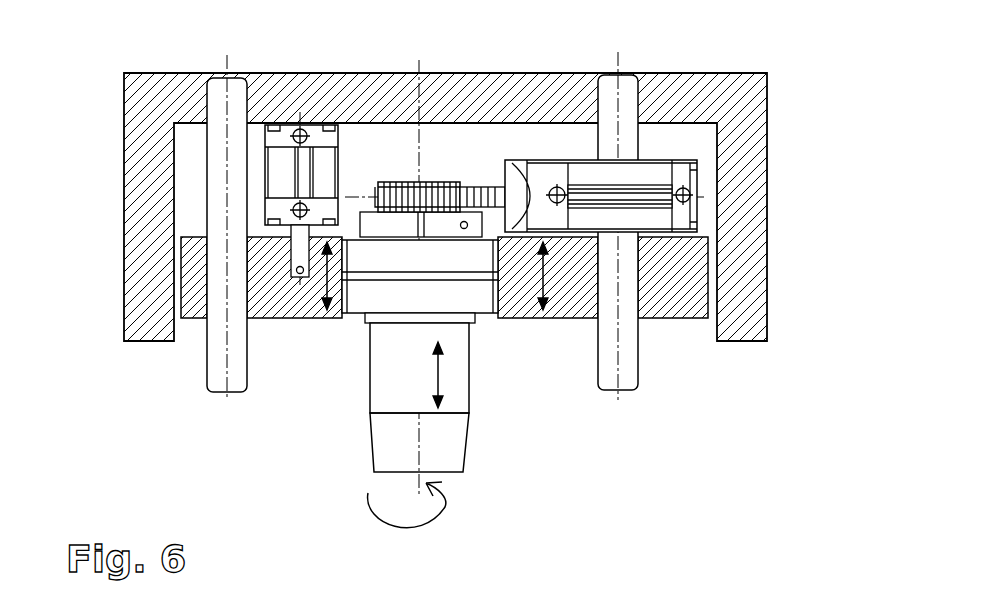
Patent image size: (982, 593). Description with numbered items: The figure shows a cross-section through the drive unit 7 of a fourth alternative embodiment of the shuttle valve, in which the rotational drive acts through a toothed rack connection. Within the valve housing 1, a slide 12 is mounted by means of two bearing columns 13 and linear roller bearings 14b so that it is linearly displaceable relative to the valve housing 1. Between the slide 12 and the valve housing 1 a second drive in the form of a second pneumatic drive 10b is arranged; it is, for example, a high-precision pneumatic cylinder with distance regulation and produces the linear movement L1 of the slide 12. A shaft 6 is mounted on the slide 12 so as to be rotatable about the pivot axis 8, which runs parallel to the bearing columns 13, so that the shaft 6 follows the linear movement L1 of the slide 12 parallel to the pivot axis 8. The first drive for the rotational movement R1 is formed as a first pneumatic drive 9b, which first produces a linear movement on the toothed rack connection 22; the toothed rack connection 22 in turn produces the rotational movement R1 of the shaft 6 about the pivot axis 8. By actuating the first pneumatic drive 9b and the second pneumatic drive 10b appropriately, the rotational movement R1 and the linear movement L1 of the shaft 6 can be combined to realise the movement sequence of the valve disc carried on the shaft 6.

The drive unit 7 is at (125, 30).
The valve housing 1 is at (143, 166).
The pivot axis 8 is at (417, 59).
The shaft 6 is at (379, 441).
The toothed rack connection 22 is at (483, 190).
The first pneumatic drive 9b is at (643, 187).
The second pneumatic drive 10b is at (278, 172).
The slide 12 is at (273, 287).
The bearing columns 13 is at (212, 219).
The linear roller bearing 14b is at (200, 295).
The linear movement L1 is at (320, 288).
The rotational movement R1 is at (443, 507).